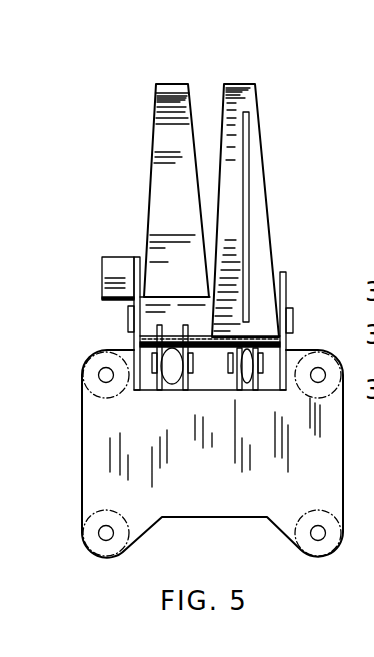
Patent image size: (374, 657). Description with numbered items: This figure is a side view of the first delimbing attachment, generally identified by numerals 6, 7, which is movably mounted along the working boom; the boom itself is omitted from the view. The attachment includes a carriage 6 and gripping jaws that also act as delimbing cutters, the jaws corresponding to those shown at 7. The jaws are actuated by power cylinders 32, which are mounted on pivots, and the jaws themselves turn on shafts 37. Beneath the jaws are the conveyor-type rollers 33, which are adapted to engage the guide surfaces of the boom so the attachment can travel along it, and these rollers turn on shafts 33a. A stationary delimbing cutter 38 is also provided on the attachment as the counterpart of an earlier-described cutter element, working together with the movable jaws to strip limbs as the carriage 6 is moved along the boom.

The carriage 6 is at (163, 273).
The delimbing attachment jaws 7 is at (195, 173).
The power cylinders 32 is at (163, 370).
The conveyor-type rollers 33 is at (317, 476).
The shafts 33a is at (107, 377).
The shafts 37 is at (128, 322).
The stationary delimbing cutter 38 is at (108, 270).